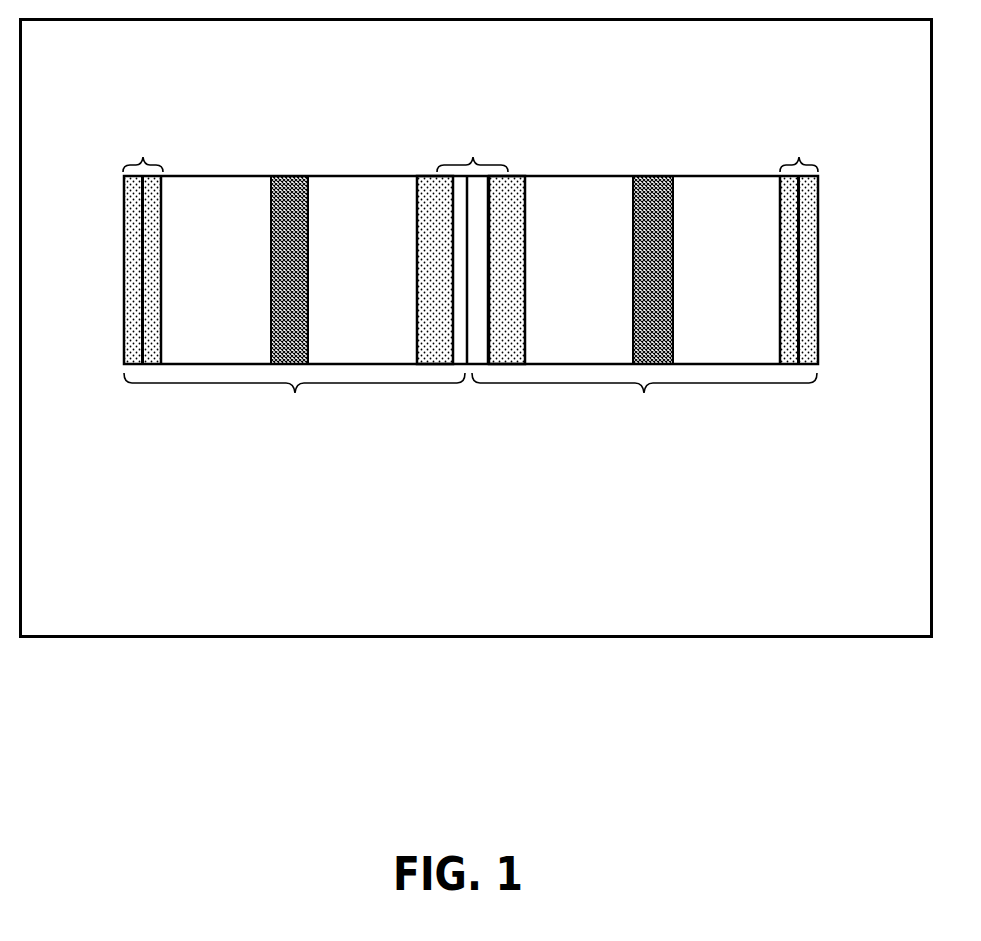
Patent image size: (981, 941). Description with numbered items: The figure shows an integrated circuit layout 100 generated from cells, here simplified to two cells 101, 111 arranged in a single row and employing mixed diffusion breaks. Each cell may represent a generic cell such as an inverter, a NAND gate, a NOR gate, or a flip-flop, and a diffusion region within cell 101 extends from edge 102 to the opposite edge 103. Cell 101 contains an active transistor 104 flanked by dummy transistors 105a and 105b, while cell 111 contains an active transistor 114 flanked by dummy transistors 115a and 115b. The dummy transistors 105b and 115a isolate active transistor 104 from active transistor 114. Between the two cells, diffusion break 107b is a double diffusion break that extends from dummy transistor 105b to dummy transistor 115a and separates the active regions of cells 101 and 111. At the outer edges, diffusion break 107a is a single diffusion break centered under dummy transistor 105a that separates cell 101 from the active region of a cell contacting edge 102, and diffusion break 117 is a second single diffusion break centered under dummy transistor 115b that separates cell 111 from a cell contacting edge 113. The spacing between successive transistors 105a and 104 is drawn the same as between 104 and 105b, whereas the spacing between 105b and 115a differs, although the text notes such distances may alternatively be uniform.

The integrated circuit layout 100 is at (75, 52).
The cell 101 is at (295, 302).
The edge 102 is at (142, 208).
The edge 103 is at (472, 233).
The active transistor 104 is at (282, 177).
The dummy transistor 105a is at (133, 248).
The dummy transistor 105b is at (435, 195).
The diffusion break 107a is at (146, 248).
The diffusion break 107b is at (472, 149).
The cell 111 is at (642, 301).
The edge 113 is at (798, 205).
The active transistor 114 is at (647, 177).
The dummy transistor 115a is at (517, 200).
The dummy transistor 115b is at (805, 255).
The diffusion break 117 is at (802, 248).